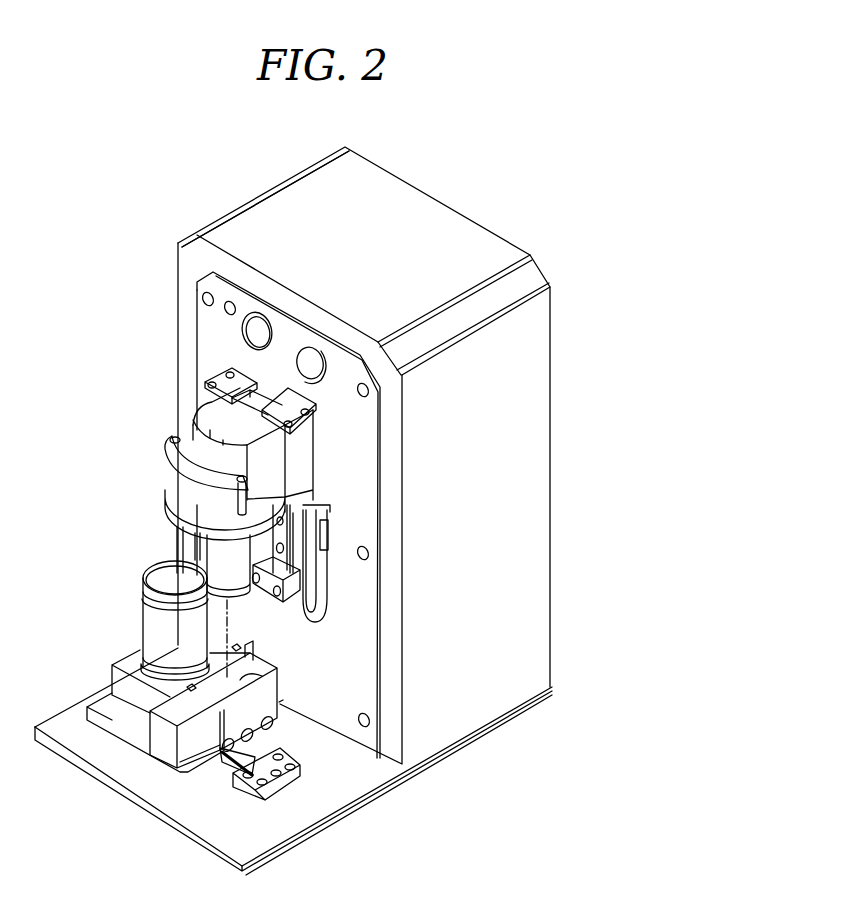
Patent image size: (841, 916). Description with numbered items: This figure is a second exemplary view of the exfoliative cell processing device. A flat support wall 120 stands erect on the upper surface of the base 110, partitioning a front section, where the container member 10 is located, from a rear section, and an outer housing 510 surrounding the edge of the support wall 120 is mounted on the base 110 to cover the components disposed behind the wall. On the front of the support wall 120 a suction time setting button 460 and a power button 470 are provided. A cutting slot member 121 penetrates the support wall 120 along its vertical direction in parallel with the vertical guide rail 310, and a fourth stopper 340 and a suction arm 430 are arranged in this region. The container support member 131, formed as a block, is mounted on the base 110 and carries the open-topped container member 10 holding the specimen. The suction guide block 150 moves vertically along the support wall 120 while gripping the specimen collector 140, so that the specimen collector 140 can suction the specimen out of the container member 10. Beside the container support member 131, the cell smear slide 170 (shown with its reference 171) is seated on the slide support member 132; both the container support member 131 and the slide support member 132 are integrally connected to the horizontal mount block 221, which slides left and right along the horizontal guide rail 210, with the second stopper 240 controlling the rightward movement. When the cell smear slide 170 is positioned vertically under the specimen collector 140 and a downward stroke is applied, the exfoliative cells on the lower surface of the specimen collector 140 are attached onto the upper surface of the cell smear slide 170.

The container member 10 is at (158, 633).
The base 110 is at (68, 722).
The support wall 120 is at (336, 677).
The cutting slot member 121 is at (307, 567).
The container support member 131 is at (130, 695).
The slide support member 132 is at (167, 740).
The specimen collector 140 is at (217, 546).
The suction guide block 150 is at (190, 412).
The cell smear slide 170 is at (344, 731).
The fixing hole 171 is at (214, 667).
The horizontal guide rail 210 is at (223, 772).
The horizontal mount block 221 is at (128, 745).
The second stopper 240 is at (238, 788).
The vertical guide rail 310 is at (320, 580).
The fourth stopper 340 is at (296, 606).
The suction arm 430 is at (317, 505).
The suction time setting button 460 is at (252, 330).
The power button 470 is at (240, 310).
The outer housing 510 is at (287, 236).